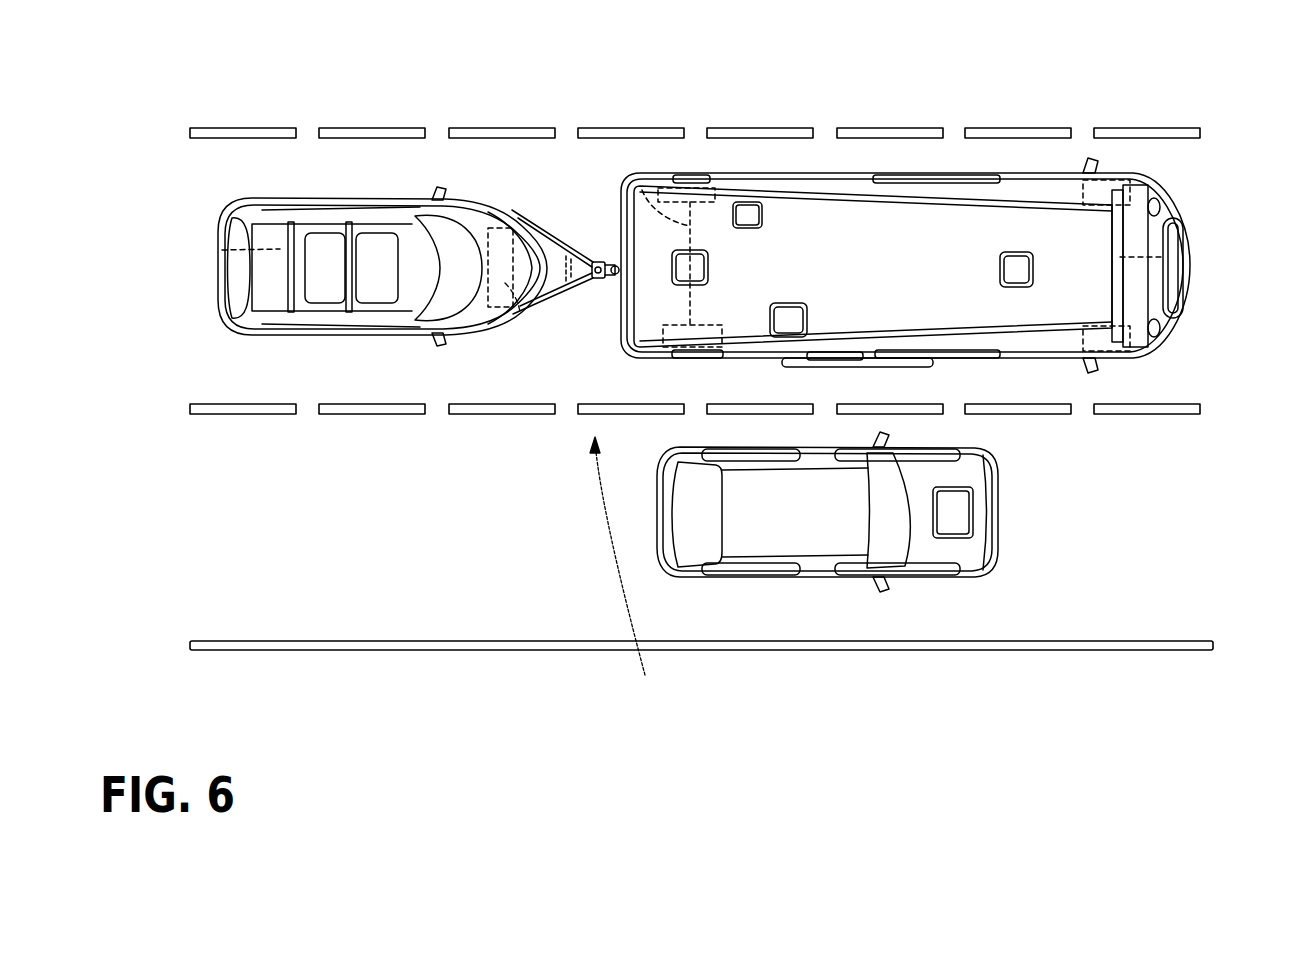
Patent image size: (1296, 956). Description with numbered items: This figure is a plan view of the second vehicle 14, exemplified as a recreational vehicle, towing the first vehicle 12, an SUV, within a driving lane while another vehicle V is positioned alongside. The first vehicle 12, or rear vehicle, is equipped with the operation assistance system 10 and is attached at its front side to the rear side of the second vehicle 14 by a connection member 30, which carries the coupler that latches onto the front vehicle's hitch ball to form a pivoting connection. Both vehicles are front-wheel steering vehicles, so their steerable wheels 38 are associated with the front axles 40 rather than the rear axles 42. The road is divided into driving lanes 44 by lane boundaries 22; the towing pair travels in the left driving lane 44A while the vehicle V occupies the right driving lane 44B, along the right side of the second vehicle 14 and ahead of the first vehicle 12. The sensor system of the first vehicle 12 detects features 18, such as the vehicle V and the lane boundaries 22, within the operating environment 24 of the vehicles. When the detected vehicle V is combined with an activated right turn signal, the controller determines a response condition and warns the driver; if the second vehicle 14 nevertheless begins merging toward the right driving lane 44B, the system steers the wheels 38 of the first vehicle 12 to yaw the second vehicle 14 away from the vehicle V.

The operation assistance system 10 is at (404, 168).
The first vehicle 12 is at (360, 202).
The second vehicle 14 is at (822, 176).
The feature 18 is at (890, 532).
The lane boundary 22 is at (517, 133).
The operating environment 24 is at (624, 571).
The connection member 30 is at (564, 238).
The steerable wheels 38 is at (491, 228).
The front axles 40 is at (1190, 273).
The rear axles 42 is at (642, 170).
The driving lanes 44 is at (238, 384).
The left driving lane 44A is at (280, 188).
The right driving lane 44B is at (290, 563).
The vehicle V is at (822, 532).